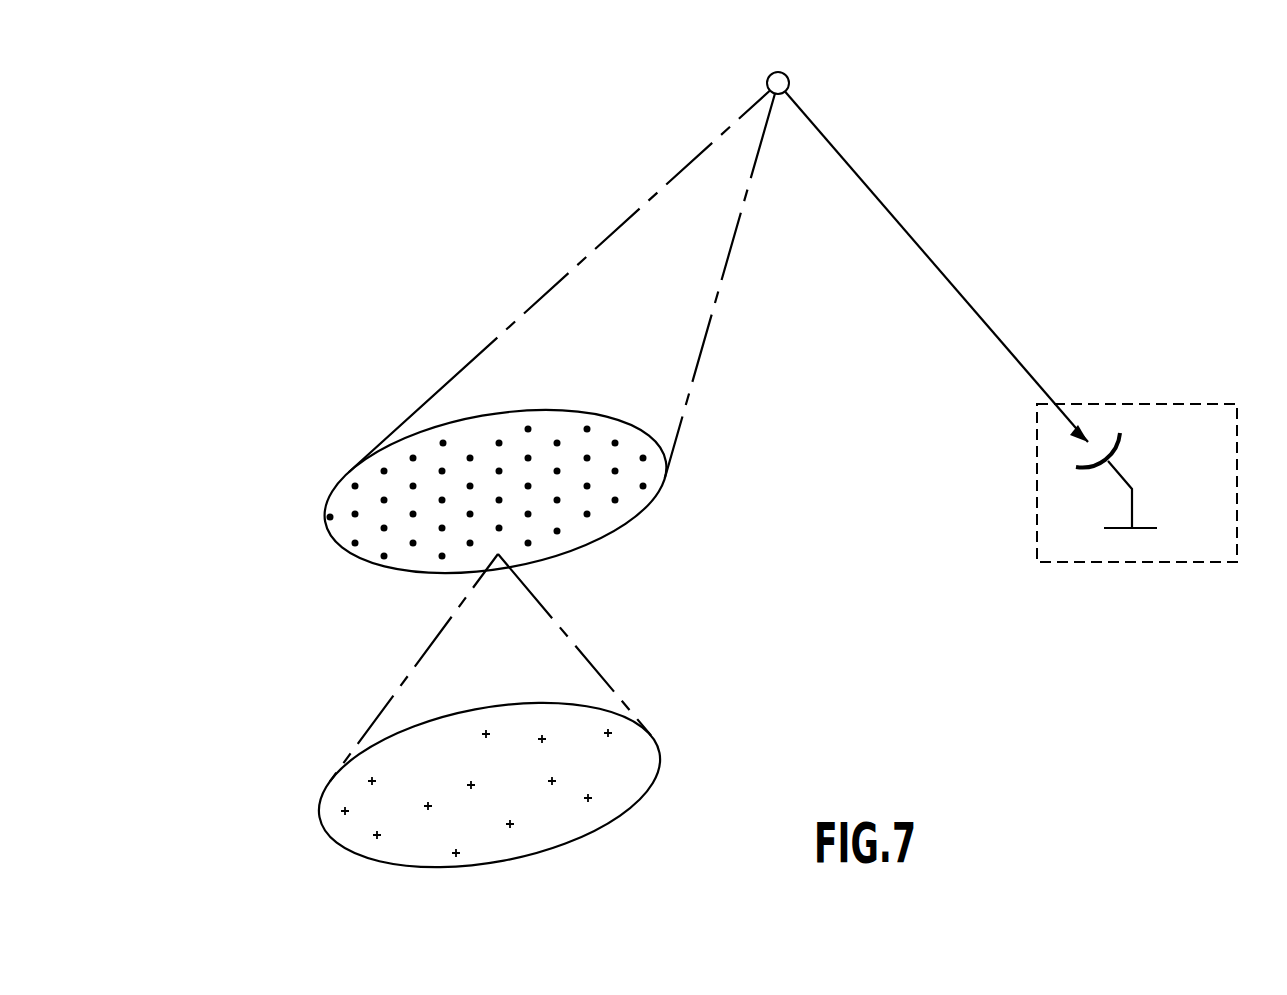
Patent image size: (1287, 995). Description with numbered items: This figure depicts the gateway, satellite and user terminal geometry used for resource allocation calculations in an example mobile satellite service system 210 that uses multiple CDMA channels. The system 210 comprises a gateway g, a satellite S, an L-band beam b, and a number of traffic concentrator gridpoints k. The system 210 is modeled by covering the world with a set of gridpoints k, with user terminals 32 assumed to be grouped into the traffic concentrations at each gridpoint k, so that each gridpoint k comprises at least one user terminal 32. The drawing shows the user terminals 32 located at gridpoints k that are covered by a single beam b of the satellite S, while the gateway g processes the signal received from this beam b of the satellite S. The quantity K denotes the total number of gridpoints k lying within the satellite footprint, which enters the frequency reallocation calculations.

The MSS system 210 is at (1052, 181).
The satellite S is at (783, 69).
The gateway g is at (1170, 403).
The L-band beam b is at (332, 486).
The traffic concentrator gridpoint k is at (555, 439).
The total number of gridpoints in the satellite footprint K is at (555, 530).
The user terminal 32 is at (484, 730).